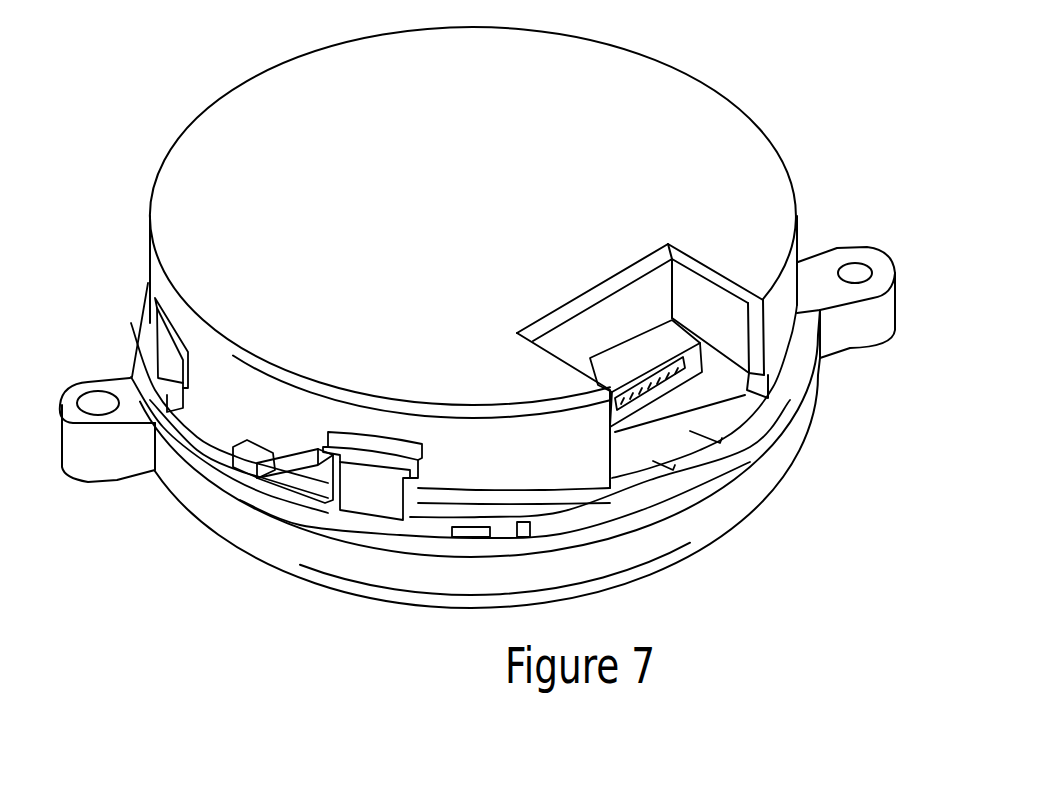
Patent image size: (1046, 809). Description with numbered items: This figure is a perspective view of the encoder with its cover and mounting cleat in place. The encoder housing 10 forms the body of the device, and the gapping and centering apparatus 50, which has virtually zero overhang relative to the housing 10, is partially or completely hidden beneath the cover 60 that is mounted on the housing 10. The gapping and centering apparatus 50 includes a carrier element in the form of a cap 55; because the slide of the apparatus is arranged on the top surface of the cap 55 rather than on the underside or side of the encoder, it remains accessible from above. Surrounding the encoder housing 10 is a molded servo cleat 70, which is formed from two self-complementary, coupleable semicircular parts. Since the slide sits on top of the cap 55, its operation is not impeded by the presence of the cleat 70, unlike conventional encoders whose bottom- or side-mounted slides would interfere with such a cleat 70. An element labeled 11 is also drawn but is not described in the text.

The housing 10 is at (660, 477).
The connector 11 is at (697, 406).
The gapping and centering apparatus 50 is at (258, 475).
The cap 55 is at (370, 500).
The cover 60 is at (748, 150).
The molded servo cleat 70 is at (62, 450).